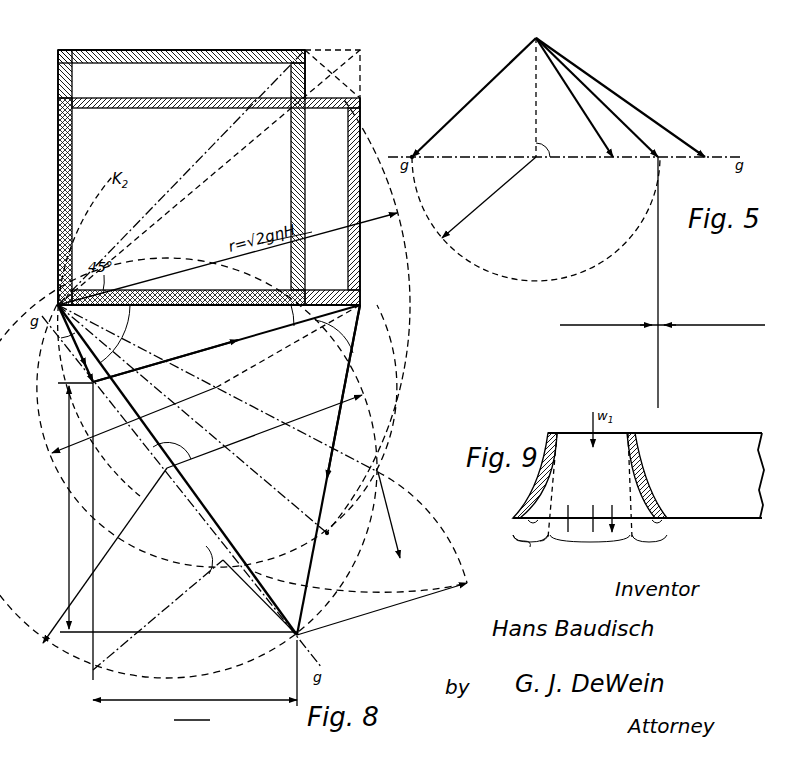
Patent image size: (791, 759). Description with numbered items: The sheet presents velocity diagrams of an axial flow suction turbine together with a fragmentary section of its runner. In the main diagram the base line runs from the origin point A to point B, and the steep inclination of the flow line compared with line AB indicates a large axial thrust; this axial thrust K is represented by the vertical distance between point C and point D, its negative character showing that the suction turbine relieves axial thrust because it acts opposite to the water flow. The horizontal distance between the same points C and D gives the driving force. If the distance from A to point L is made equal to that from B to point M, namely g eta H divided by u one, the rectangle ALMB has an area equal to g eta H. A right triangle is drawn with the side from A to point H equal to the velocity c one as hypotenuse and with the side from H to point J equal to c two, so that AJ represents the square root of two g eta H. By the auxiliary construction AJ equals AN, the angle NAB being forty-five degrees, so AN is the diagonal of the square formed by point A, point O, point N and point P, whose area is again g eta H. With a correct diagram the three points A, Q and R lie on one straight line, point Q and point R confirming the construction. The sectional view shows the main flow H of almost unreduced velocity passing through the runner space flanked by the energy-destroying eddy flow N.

In FIG. 8, the corner point O of square AONP O is at (174, 47).
In FIG. 8, the point N / secondary eddy flow N is at (300, 159).
In FIG. 9, the point N / secondary eddy flow N is at (590, 551).
In FIG. 8, the point R is at (340, 65).
In FIG. 8, the point L is at (56, 177).
In FIG. 8, the point M is at (225, 190).
In FIG. 8, the point Q is at (209, 177).
In FIG. 8, the corner point P of square AONP P is at (216, 291).
In FIG. 8, the point A is at (207, 464).
In FIG. 8, the point B is at (235, 465).
In FIG. 5, the point B is at (564, 96).
In FIG. 8, the point C is at (75, 530).
In FIG. 5, the point C is at (406, 146).
In FIG. 8, the point D is at (345, 607).
In FIG. 8, the point E (circle centre) E is at (188, 468).
In FIG. 5, the point E (circle centre) E is at (588, 273).
In FIG. 8, the point F is at (217, 441).
In FIG. 8, the point G is at (185, 649).
In FIG. 8, the point H / main flow H is at (422, 520).
In FIG. 9, the point H / main flow H is at (590, 551).
In FIG. 8, the point J is at (329, 539).
In FIG. 8, the axial thrust K is at (173, 509).